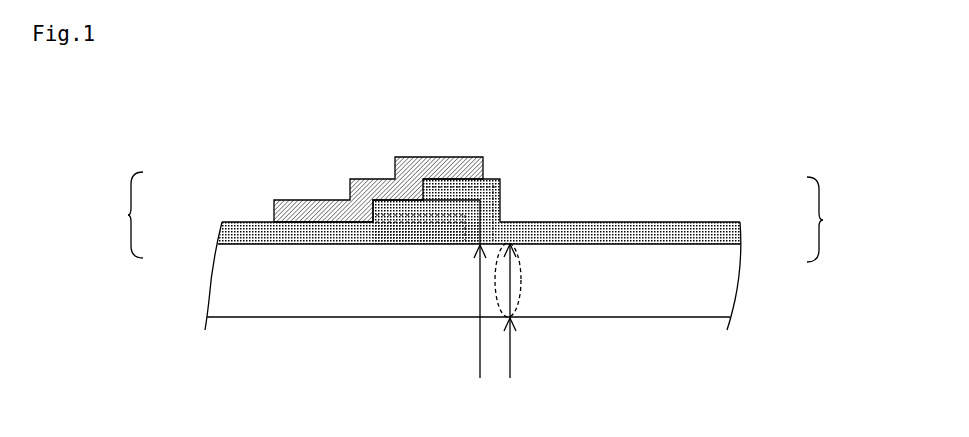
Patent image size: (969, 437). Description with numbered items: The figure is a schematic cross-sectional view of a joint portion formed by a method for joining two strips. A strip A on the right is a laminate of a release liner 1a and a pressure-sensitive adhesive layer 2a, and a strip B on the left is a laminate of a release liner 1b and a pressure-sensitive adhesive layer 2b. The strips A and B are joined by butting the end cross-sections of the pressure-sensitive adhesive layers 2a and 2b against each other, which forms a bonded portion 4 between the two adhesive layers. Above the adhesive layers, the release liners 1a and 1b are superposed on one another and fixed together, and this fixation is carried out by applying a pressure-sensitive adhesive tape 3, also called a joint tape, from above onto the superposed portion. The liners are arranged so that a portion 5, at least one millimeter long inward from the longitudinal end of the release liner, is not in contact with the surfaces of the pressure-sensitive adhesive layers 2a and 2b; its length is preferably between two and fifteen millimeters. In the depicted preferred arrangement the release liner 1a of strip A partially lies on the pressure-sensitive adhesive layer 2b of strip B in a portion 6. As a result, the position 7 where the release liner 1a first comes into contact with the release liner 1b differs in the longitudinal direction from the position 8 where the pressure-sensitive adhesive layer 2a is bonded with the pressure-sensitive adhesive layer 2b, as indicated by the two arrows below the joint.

The release liner 1a is at (723, 223).
The release liner 1b is at (218, 222).
The pressure-sensitive adhesive layer 2a is at (717, 288).
The pressure-sensitive adhesive layer 2b is at (240, 292).
The pressure-sensitive adhesive tape 3 is at (438, 164).
The bonded portion 4 is at (518, 298).
The portion 5 is at (380, 182).
The portion 6 is at (505, 222).
The position 7 is at (481, 326).
The position 8 is at (511, 325).
The strip A is at (829, 219).
The strip B is at (121, 215).